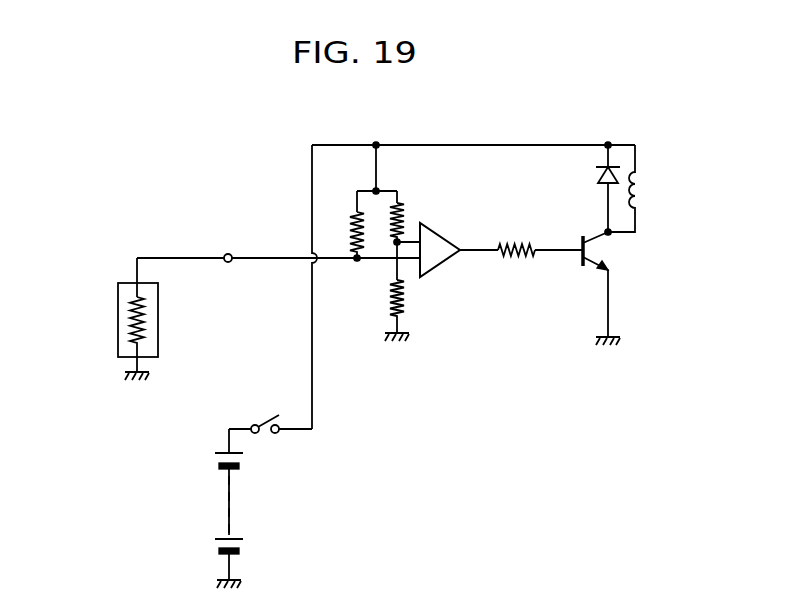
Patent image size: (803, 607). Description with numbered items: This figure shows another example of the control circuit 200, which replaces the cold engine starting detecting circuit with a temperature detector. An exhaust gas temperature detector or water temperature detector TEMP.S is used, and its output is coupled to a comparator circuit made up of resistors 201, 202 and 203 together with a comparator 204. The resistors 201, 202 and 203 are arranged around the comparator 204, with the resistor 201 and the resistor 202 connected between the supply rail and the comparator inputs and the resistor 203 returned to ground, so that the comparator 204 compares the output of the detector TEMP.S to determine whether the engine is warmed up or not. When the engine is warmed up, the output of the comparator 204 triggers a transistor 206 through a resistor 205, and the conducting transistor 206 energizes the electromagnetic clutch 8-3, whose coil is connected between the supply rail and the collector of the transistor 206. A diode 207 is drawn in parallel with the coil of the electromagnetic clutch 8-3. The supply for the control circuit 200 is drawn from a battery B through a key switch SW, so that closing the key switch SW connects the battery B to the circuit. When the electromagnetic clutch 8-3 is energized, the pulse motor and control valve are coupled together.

The control circuit 200 is at (386, 266).
The resistor 201 is at (344, 220).
The resistor 202 is at (405, 220).
The resistor 203 is at (392, 312).
The comparator 204 is at (442, 242).
The resistor 205 is at (533, 257).
The transistor 206 is at (602, 248).
The diode 207 is at (600, 172).
The electromagnetic clutch 8-3 is at (644, 190).
The exhaust gas temperature detector TEMP.S is at (125, 328).
The key switch SW is at (262, 421).
The battery B is at (224, 510).